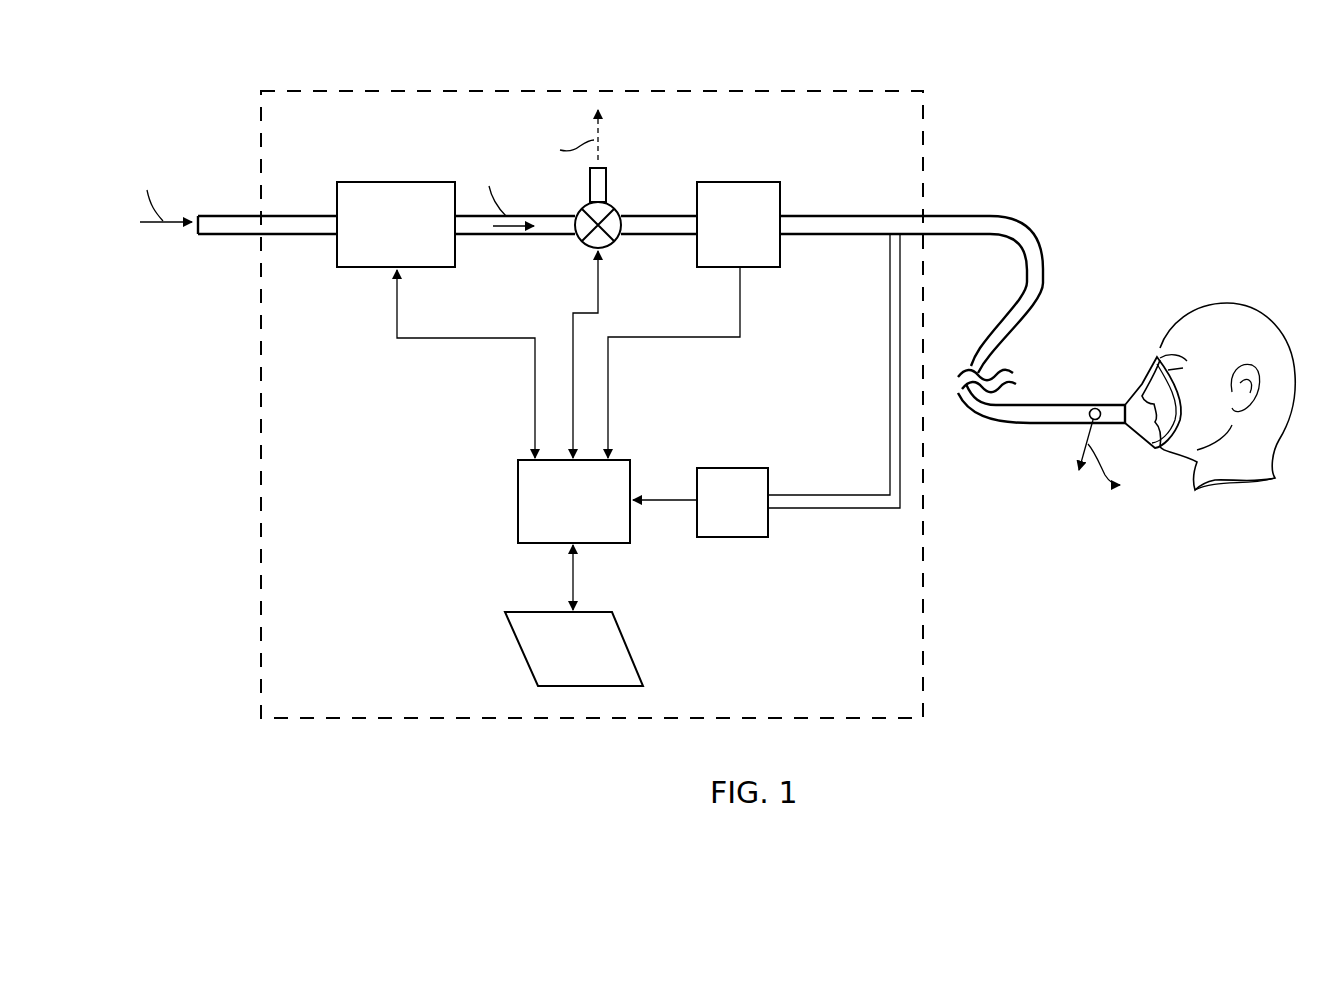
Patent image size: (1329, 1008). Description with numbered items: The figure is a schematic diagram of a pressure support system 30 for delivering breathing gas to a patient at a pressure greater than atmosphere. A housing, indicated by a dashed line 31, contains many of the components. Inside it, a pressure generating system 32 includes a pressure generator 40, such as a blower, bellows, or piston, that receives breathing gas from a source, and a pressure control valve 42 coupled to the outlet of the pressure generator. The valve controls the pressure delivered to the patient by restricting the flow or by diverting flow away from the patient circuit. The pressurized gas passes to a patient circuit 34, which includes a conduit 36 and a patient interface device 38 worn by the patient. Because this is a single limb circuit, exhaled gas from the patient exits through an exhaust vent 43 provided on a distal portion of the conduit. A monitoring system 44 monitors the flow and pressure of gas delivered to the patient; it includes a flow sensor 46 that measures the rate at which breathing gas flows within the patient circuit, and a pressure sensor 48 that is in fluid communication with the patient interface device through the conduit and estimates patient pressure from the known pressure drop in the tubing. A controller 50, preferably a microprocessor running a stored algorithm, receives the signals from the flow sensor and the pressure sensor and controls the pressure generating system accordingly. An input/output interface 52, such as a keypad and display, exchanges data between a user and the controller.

The pressure support system 30 is at (1055, 717).
The housing 31 is at (830, 53).
The pressure generating system 32 is at (371, 111).
The patient circuit 34 is at (1051, 206).
The conduit 36 is at (948, 212).
The patient interface device 38 is at (1140, 378).
The pressure generator 40 is at (396, 224).
The pressure control valve 42 is at (612, 200).
The exhaust vent 43 is at (1093, 409).
The monitoring system 44 is at (776, 635).
The flow sensor 46 is at (738, 224).
The pressure sensor 48 is at (732, 467).
The controller 50 is at (574, 501).
The input/output interface 52 is at (518, 655).